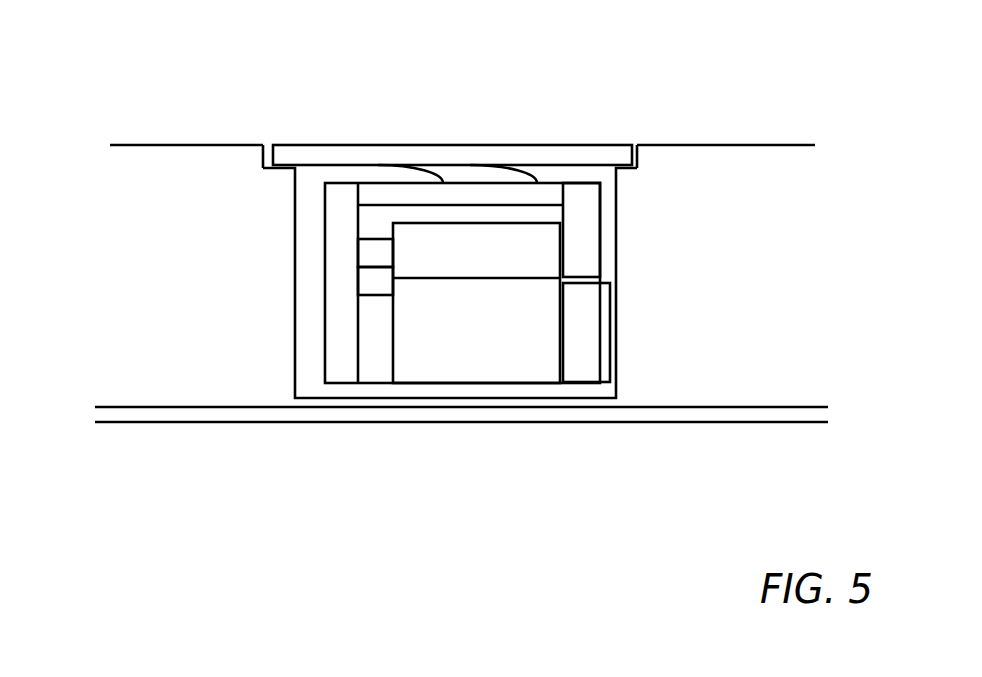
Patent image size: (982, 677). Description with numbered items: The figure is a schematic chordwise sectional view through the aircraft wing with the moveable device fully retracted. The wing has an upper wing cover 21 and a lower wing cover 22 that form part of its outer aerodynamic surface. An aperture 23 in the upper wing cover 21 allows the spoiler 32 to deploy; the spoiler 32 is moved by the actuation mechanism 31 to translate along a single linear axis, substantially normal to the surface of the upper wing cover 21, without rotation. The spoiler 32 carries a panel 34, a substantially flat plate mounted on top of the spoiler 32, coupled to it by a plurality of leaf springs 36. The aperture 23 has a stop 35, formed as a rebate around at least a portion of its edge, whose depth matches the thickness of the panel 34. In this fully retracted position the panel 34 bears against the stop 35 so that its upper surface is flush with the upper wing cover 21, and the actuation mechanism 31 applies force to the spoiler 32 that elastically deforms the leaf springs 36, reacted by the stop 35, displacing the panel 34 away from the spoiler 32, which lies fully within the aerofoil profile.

The upper wing cover 21 is at (204, 141).
The lower wing cover 22 is at (270, 413).
The aperture 23 is at (265, 131).
The actuation mechanism 31 is at (475, 334).
The spoiler 32 is at (337, 353).
The panel 34 is at (325, 152).
The stop 35 is at (262, 184).
The leaf springs 36 is at (441, 175).